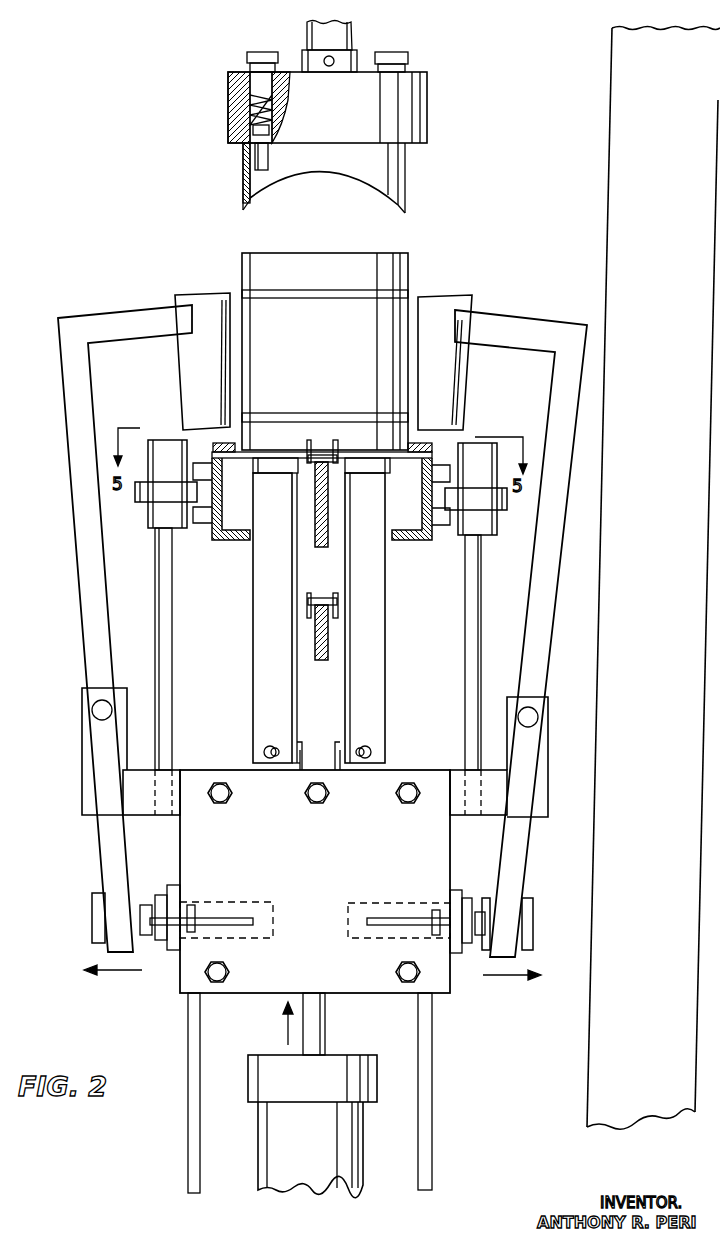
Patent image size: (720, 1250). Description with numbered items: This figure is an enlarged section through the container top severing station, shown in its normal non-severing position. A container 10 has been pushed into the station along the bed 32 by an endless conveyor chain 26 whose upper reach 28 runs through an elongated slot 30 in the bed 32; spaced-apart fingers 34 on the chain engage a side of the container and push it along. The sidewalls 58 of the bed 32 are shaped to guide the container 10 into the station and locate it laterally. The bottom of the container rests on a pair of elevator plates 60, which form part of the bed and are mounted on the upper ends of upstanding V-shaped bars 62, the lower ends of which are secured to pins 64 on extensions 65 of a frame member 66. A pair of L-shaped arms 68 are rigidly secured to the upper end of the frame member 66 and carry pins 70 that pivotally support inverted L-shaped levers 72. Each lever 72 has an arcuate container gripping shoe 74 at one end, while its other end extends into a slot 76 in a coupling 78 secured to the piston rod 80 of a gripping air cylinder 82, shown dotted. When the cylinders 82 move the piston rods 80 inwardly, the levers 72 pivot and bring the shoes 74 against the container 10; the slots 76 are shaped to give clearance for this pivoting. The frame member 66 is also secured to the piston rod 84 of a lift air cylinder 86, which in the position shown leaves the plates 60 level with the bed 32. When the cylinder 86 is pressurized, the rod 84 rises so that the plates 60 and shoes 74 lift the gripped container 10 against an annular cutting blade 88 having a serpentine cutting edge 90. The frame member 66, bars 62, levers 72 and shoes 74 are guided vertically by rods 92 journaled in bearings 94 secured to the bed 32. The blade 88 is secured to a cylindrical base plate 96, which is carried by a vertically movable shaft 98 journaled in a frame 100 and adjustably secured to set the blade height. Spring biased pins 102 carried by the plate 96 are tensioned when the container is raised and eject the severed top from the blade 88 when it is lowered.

The container 10 is at (388, 252).
The endless conveyor chain 26 is at (322, 594).
The upper reach 28 is at (321, 456).
The elongated slot 30 is at (341, 452).
The bed 32 is at (277, 456).
The fingers 34 is at (308, 443).
The sidewalls 58 is at (223, 443).
The elevator plates 60 is at (275, 470).
The V-shaped bars 62 is at (259, 589).
The pins 64 is at (262, 751).
The extensions 65 is at (340, 750).
The frame member 66 is at (372, 881).
The L-shaped arms 68 is at (88, 760).
The pins 70 is at (92, 712).
The L-shaped inverted levers 72 is at (77, 547).
The arcuate container gripping shoe 74 is at (206, 298).
The slot 76 is at (135, 895).
The coupling 78 is at (92, 918).
The piston rod 80 is at (177, 915).
The gripping fluid or air cylinder 82 is at (229, 906).
The piston rod 84 is at (316, 1028).
The lift fluid or air cylinder 86 is at (363, 1141).
The annular cutting or shearing blade 88 is at (402, 180).
The serpentine cutting surface or edge 90 is at (395, 201).
The rods 92 is at (172, 684).
The bearings 94 is at (148, 493).
The cylindrical base plate 96 is at (428, 106).
The vertically movable shaft 98 is at (357, 37).
The frame 100 is at (612, 239).
The spring biased pins 102 is at (258, 152).